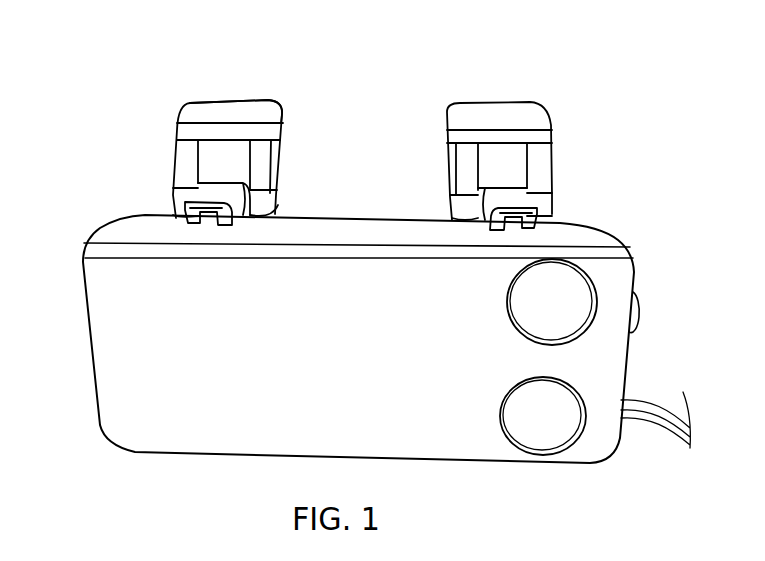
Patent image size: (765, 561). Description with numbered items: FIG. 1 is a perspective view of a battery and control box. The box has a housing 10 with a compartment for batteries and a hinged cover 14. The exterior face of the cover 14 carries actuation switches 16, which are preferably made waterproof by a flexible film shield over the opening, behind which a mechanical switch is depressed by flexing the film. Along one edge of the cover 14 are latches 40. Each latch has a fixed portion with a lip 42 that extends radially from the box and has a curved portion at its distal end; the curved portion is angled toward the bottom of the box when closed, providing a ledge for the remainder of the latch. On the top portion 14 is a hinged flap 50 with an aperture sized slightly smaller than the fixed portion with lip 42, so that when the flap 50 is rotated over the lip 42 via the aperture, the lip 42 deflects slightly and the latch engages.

The housing 10 is at (632, 191).
The hinged cover 14 is at (573, 372).
The actuation switches 16 is at (540, 314).
The clip 40 is at (292, 75).
The lip 42 is at (193, 208).
The hinged flap 50 is at (235, 120).